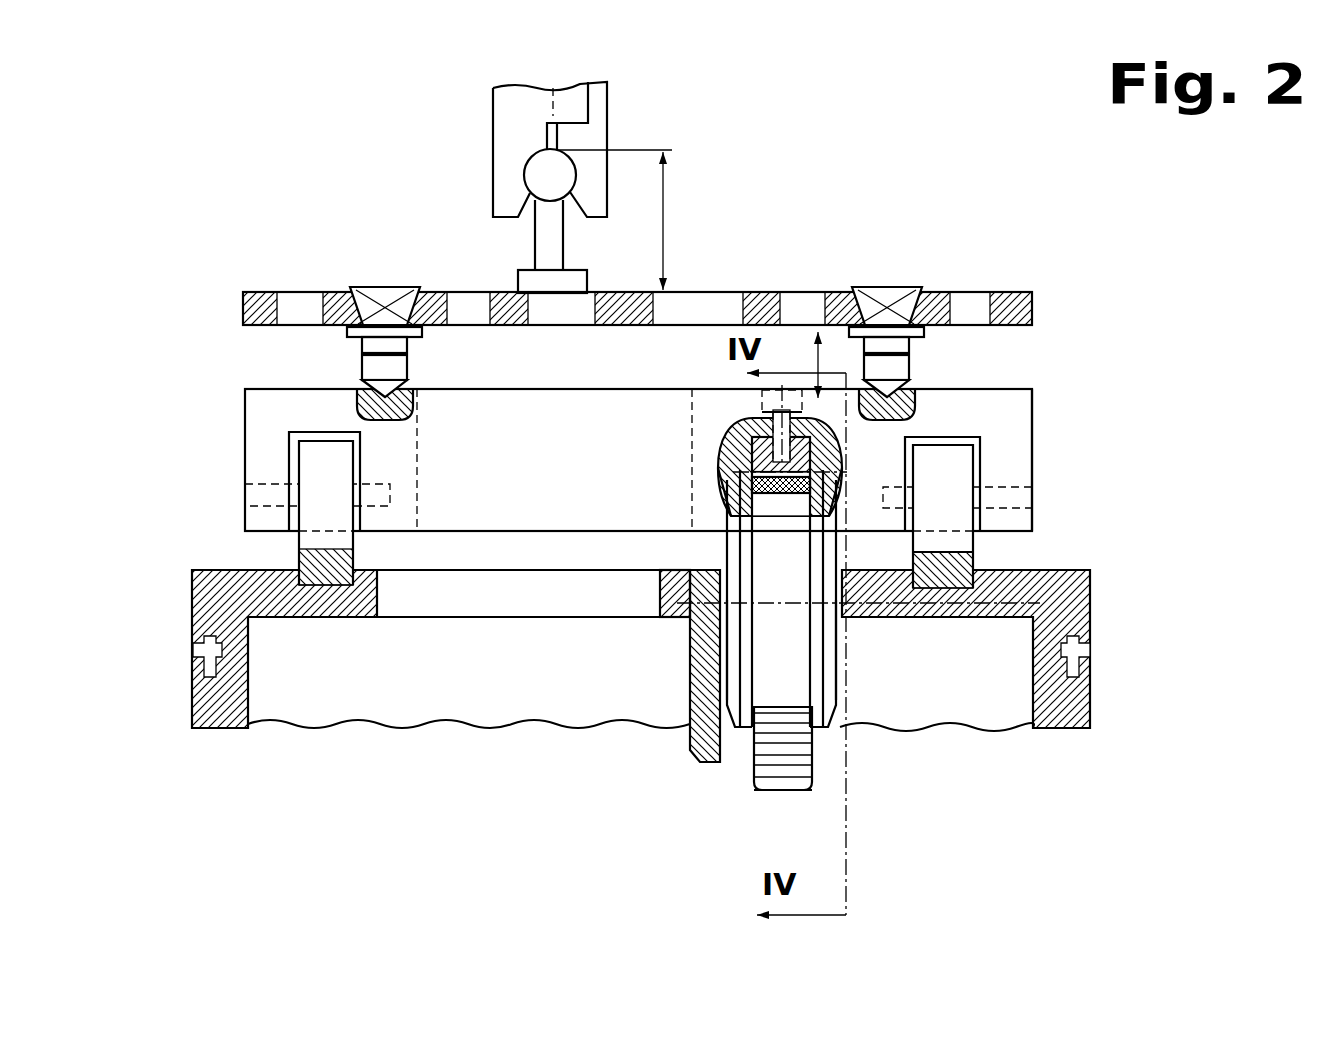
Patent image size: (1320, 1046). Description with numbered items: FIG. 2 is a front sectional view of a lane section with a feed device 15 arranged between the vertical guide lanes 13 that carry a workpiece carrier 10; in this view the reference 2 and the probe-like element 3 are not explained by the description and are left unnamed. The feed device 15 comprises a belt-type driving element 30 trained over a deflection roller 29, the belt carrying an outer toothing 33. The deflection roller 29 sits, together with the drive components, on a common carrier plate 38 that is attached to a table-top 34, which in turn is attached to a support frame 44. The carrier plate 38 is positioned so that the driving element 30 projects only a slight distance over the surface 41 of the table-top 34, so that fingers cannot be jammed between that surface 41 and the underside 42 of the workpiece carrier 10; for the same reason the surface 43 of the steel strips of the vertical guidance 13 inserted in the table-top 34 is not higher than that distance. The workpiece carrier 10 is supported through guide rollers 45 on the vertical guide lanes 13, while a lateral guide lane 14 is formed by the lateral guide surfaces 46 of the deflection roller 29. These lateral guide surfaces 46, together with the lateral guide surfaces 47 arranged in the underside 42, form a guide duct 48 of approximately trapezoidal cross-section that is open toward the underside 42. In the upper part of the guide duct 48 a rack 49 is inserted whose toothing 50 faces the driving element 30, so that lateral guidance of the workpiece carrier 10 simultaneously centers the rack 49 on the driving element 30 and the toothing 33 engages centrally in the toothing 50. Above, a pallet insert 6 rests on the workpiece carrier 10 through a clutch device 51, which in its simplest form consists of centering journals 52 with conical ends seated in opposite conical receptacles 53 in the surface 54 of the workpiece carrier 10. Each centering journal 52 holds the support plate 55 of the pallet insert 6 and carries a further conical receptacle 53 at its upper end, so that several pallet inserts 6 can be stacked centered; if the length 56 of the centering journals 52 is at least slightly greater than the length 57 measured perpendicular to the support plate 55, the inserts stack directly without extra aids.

The measuring device 2 is at (1047, 452).
The probe head 3 is at (515, 165).
The pallet insert 6 is at (948, 273).
The workpiece carrier 10 is at (1017, 468).
The vertical guide lanes 13 is at (340, 583).
The lateral guide lane 14 is at (853, 537).
The feed device 15 is at (755, 833).
The deflection roller 29 is at (797, 695).
The belt-type driving element 30 is at (788, 497).
The toothing 33 is at (798, 742).
The table-top 34 is at (225, 577).
The carrier plate 38 is at (693, 755).
The surface 41 is at (533, 565).
The underside 42 is at (482, 532).
The surface 43 is at (947, 545).
The support frame 44 is at (202, 629).
The guide rollers 45 is at (314, 464).
The lateral guide surfaces 46 is at (728, 722).
The lateral guide surfaces 47 is at (717, 505).
The guide duct 48 is at (746, 464).
The rack 49 is at (810, 415).
The toothing 50 is at (748, 462).
The clutch device 51 is at (346, 378).
The centering journals 52 is at (357, 366).
The conical receptacles 53 is at (385, 287).
The surface 54 is at (482, 387).
The support plate 55 is at (245, 290).
The length 56 is at (818, 330).
The length 57 is at (667, 200).